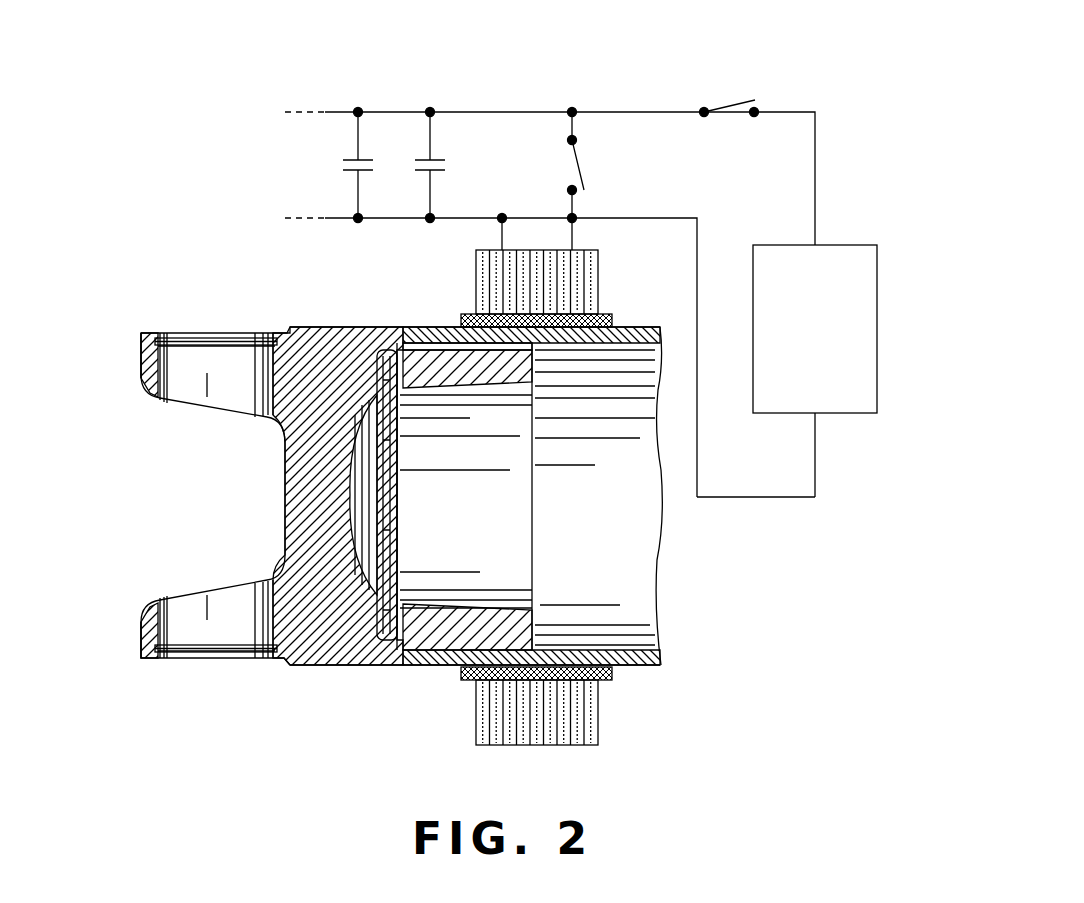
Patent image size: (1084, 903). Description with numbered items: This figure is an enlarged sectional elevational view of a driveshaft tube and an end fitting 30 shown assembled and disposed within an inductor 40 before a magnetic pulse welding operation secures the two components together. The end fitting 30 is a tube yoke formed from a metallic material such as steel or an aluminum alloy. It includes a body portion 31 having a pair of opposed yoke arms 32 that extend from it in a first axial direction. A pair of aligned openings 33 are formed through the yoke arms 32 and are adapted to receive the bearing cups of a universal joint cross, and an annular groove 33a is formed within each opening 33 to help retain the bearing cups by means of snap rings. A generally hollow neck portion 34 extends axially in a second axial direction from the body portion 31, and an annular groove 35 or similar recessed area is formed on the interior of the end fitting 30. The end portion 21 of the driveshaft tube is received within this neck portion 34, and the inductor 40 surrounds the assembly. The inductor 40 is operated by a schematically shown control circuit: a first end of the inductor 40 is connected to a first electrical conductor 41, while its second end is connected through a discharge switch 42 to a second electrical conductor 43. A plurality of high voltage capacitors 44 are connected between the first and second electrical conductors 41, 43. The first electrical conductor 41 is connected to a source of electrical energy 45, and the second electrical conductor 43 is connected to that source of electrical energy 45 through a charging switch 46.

The end portion 21 is at (632, 668).
The end fitting 30 is at (268, 710).
The body portion 31 is at (330, 648).
The yoke arms 32 is at (141, 357).
The openings 33 is at (160, 378).
The annular groove 33a is at (235, 335).
The neck portion 34 is at (520, 368).
The annular groove 35 is at (380, 390).
The inductor 40 is at (478, 270).
The first electrical conductor 41 is at (748, 500).
The discharge switch 42 is at (578, 165).
The second electrical conductor 43 is at (632, 110).
The high voltage capacitors 44 is at (350, 165).
The source of electrical energy 45 is at (878, 328).
The charging switch 46 is at (733, 100).